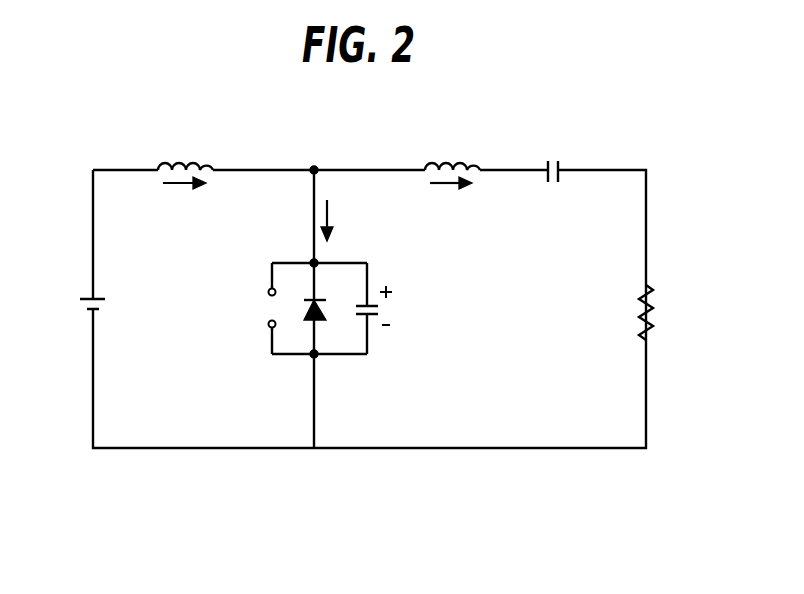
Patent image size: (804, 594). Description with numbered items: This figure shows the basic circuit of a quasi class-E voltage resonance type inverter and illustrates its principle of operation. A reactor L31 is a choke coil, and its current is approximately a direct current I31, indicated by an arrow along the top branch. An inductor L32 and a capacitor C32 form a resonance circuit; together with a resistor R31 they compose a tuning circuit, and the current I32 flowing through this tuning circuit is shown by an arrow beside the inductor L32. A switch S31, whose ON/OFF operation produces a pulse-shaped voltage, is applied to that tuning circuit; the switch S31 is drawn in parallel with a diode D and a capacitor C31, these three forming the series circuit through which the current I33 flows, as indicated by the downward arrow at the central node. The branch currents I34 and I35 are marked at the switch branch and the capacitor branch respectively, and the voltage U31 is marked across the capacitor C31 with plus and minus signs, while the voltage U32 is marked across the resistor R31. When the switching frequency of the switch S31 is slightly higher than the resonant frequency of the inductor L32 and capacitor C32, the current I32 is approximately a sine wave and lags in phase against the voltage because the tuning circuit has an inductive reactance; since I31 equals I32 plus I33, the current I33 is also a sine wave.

The reactor L31 is at (213, 153).
The direct current I31 is at (184, 198).
The inductor L32 is at (480, 153).
The tuning circuit current I32 is at (451, 200).
The series circuit current I33 is at (346, 215).
The capacitor C32 is at (550, 153).
The switch branch current I34 is at (250, 292).
The capacitor branch current I35 is at (387, 292).
The switch S31 is at (245, 308).
The diode D is at (302, 307).
The capacitor C31 is at (349, 330).
The capacitor voltage U31 is at (410, 306).
The resistor R31 is at (618, 312).
The load voltage U32 is at (675, 312).